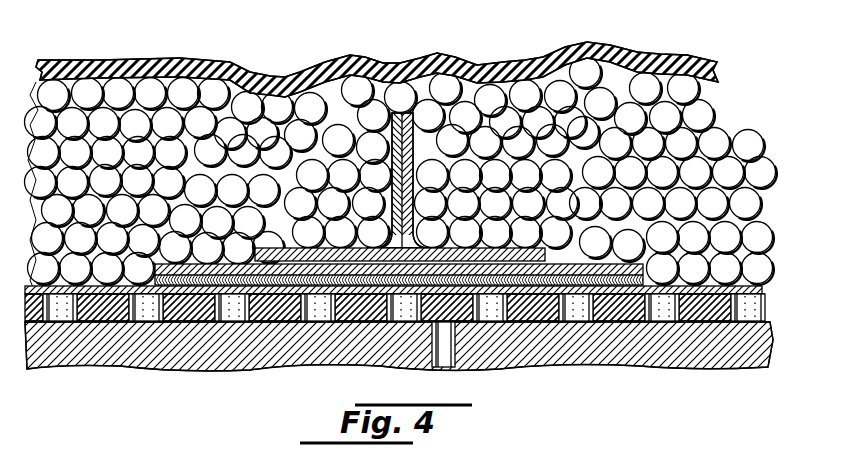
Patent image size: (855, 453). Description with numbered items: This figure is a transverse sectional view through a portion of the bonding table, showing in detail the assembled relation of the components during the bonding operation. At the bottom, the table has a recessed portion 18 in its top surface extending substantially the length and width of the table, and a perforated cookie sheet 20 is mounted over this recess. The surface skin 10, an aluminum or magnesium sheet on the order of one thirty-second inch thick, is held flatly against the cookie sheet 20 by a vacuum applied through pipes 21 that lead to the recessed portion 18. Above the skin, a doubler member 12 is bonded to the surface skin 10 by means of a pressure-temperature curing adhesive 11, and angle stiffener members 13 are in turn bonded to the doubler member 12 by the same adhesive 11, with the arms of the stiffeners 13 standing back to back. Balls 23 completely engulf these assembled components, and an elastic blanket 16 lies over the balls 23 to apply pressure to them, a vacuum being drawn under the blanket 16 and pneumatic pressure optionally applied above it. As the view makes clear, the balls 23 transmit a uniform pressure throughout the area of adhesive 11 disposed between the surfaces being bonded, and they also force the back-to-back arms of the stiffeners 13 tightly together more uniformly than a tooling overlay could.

The surface skin 10 is at (512, 290).
The adhesive 11 is at (262, 286).
The doubler member 12 is at (182, 287).
The angle stiffener members 13 is at (392, 123).
The elastic blanket 16 is at (215, 40).
The recessed portion 18 is at (166, 323).
The perforated cookie sheet 20 is at (763, 303).
The pipes 21 is at (440, 368).
The balls 23 is at (281, 92).